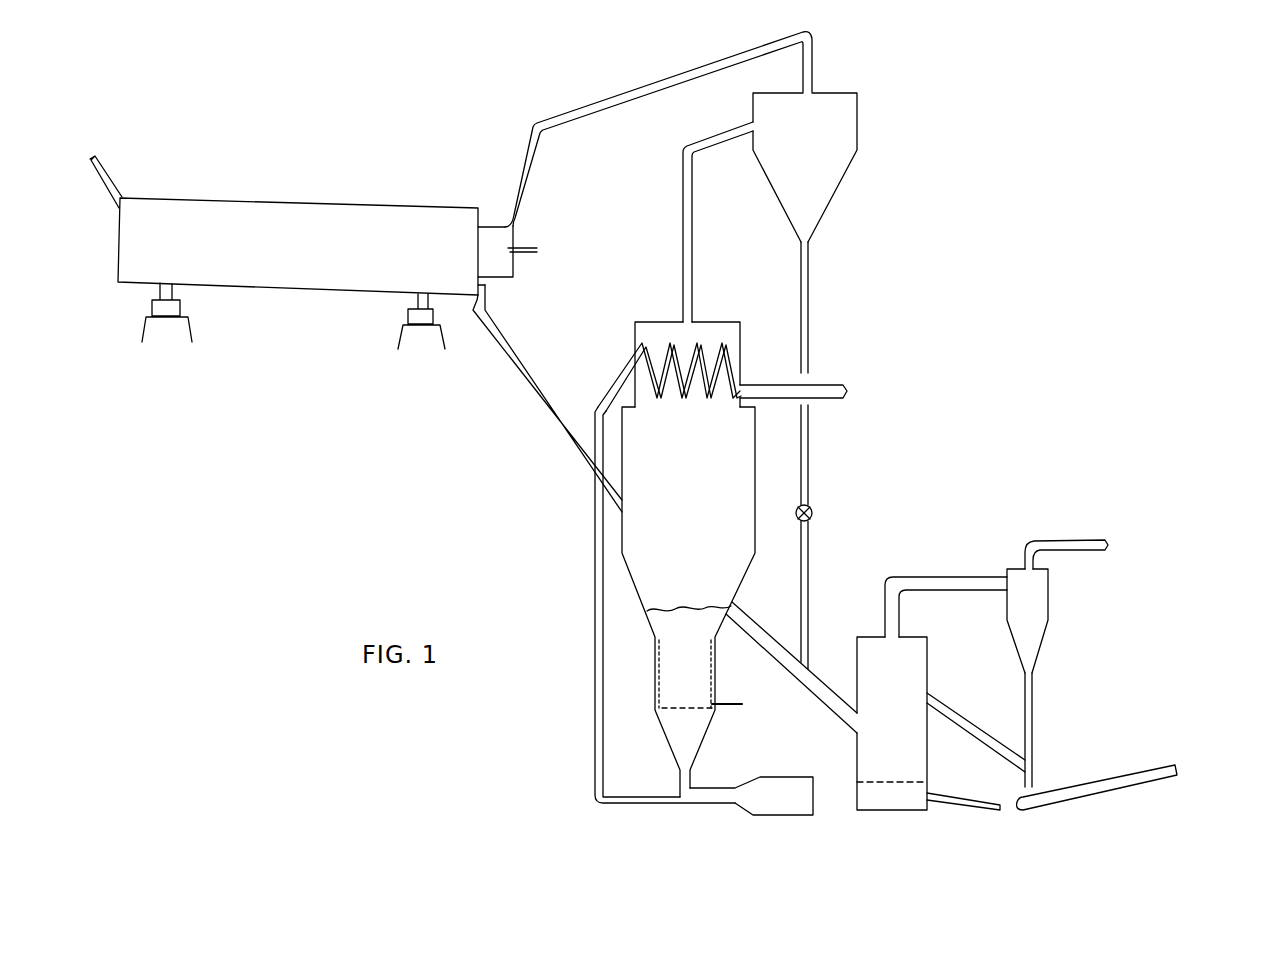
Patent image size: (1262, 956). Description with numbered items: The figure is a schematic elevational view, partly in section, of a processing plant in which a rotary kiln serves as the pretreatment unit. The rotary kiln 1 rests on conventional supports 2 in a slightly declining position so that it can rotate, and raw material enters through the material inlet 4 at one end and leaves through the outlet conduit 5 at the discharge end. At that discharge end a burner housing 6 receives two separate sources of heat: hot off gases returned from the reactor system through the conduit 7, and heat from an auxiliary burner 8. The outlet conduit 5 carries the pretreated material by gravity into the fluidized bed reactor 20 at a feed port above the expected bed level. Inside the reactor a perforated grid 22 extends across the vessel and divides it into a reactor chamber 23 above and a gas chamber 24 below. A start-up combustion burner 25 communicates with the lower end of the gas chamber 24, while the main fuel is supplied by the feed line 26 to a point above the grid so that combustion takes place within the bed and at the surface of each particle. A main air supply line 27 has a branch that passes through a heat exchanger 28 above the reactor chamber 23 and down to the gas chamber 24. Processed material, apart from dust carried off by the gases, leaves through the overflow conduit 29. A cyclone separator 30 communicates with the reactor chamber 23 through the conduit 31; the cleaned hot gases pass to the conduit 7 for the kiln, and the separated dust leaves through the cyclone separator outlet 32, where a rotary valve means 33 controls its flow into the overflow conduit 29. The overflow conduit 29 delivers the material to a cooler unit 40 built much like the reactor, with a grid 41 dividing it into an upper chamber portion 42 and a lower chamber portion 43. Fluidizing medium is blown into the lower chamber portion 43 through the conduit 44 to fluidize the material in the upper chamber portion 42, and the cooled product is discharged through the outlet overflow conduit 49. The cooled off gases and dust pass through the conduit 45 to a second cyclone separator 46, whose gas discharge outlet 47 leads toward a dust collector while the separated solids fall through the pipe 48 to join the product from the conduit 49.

The rotary kiln 1 is at (264, 198).
The supports 2 is at (191, 337).
The material inlet 4 is at (114, 182).
The outlet conduit 5 is at (485, 308).
The burner housing 6 is at (498, 265).
The conduit 7 is at (597, 100).
The auxiliary burner 8 is at (523, 255).
The fluidized bed reactor 20 is at (757, 488).
The perforated grid 22 is at (661, 708).
The reactor chamber 23 is at (670, 462).
The gas chamber 24 is at (676, 734).
The start-up combustion burner 25 is at (758, 773).
The feed line 26 is at (727, 699).
The main air supply line 27 is at (822, 382).
The heat exchanger 28 is at (742, 350).
The overflow conduit 29 is at (747, 602).
The cyclone separator 30 is at (860, 137).
The conduit 31 is at (682, 207).
The cyclone separator outlet 32 is at (812, 295).
The rotary valve means 33 is at (812, 513).
The cooler unit 40 is at (928, 668).
The grid 41 is at (868, 780).
The upper chamber portion 42 is at (878, 677).
The lower chamber portion 43 is at (878, 809).
The conduit 44 is at (958, 810).
The conduit 45 is at (917, 575).
The second cyclone separator 46 is at (1050, 605).
The gas discharge outlet 47 is at (1045, 537).
The pipe 48 is at (1034, 695).
The outlet overflow conduit 49 is at (960, 712).